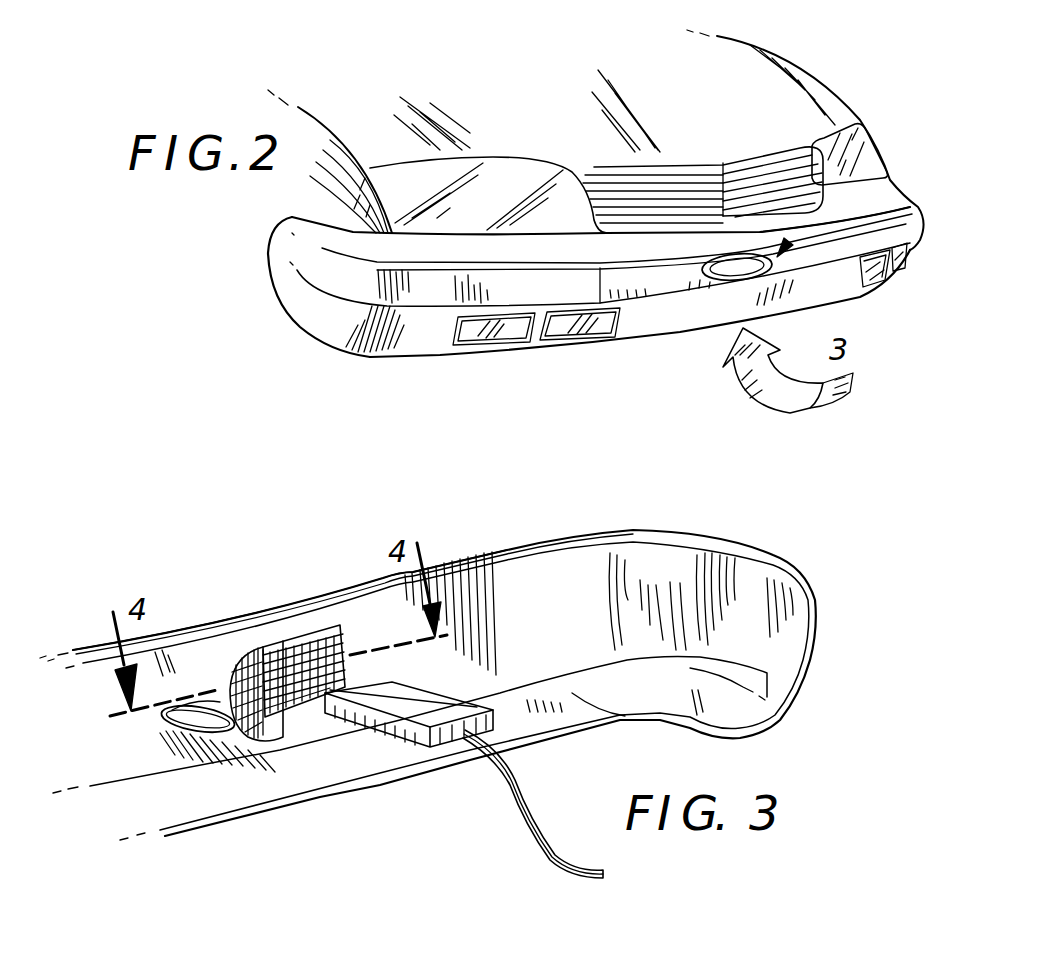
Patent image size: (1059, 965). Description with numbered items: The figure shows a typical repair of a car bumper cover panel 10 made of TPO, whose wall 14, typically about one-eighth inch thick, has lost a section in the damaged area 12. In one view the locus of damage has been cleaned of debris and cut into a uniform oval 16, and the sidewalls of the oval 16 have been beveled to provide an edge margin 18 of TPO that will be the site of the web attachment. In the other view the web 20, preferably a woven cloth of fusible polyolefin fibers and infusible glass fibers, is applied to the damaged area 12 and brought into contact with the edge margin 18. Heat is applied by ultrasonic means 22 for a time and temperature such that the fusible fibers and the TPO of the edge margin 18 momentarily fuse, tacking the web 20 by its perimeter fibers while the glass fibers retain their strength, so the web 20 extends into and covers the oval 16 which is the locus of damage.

In FIG. 2, the car bumper cover panel 10 is at (330, 322).
In FIG. 3, the car bumper cover panel 10 is at (563, 538).
In FIG. 2, the damaged area 12 is at (770, 272).
In FIG. 3, the damaged area 12 is at (350, 637).
In FIG. 2, the wall 14 is at (660, 285).
In FIG. 3, the wall 14 is at (160, 673).
In FIG. 2, the oval 16 is at (725, 273).
In FIG. 3, the oval 16 is at (170, 722).
In FIG. 2, the edge margin 18 is at (787, 245).
In FIG. 3, the edge margin 18 is at (230, 728).
In FIG. 3, the web 20 is at (278, 650).
In FIG. 3, the ultrasonic means 22 is at (393, 727).